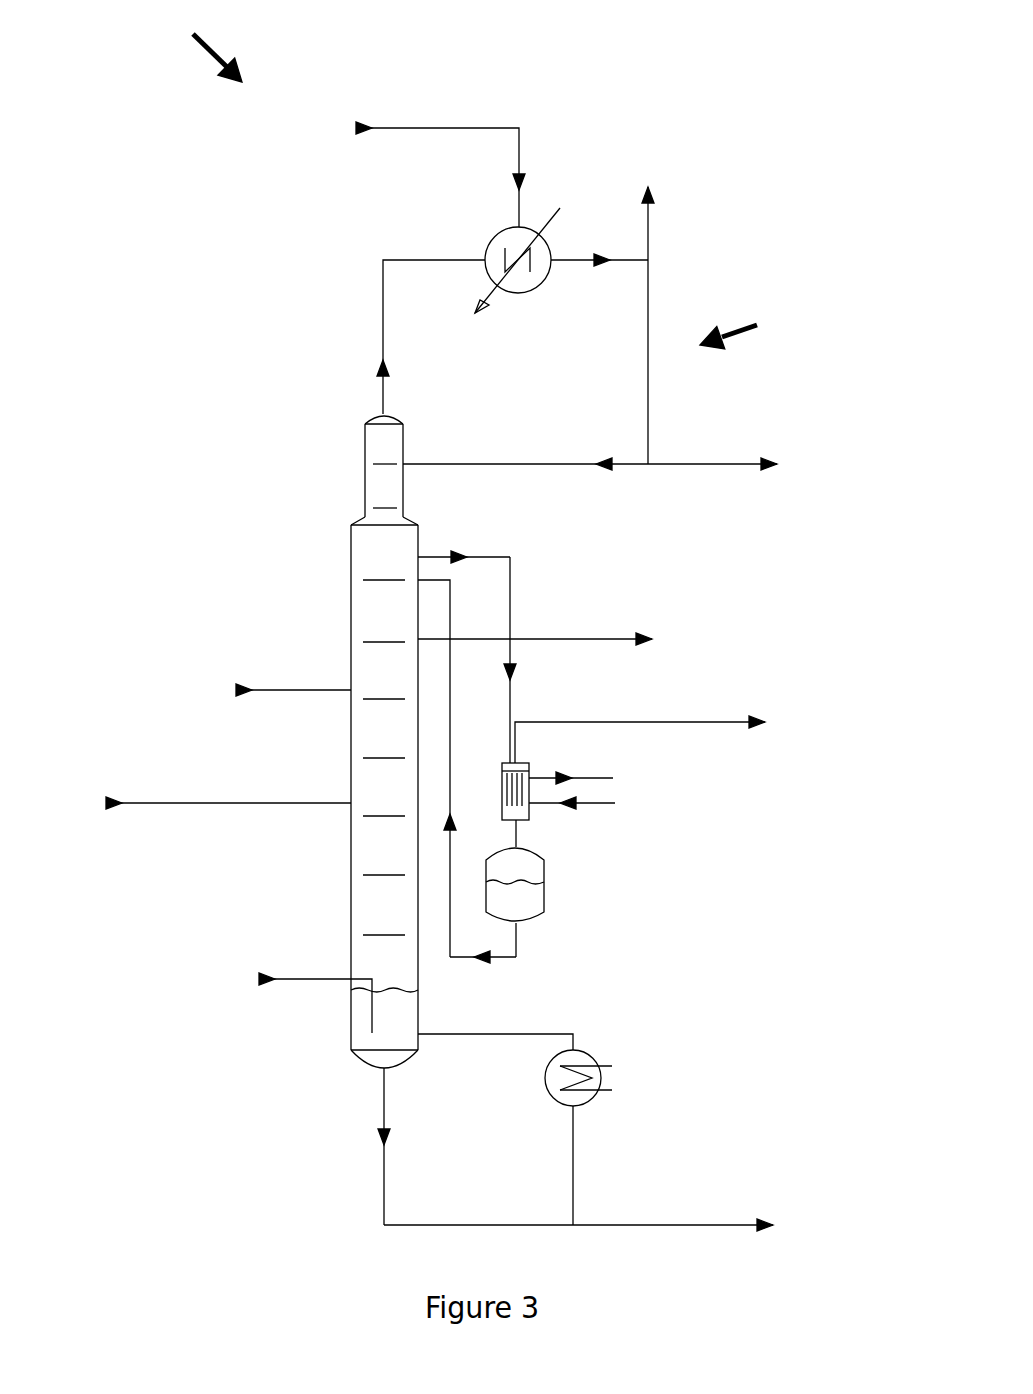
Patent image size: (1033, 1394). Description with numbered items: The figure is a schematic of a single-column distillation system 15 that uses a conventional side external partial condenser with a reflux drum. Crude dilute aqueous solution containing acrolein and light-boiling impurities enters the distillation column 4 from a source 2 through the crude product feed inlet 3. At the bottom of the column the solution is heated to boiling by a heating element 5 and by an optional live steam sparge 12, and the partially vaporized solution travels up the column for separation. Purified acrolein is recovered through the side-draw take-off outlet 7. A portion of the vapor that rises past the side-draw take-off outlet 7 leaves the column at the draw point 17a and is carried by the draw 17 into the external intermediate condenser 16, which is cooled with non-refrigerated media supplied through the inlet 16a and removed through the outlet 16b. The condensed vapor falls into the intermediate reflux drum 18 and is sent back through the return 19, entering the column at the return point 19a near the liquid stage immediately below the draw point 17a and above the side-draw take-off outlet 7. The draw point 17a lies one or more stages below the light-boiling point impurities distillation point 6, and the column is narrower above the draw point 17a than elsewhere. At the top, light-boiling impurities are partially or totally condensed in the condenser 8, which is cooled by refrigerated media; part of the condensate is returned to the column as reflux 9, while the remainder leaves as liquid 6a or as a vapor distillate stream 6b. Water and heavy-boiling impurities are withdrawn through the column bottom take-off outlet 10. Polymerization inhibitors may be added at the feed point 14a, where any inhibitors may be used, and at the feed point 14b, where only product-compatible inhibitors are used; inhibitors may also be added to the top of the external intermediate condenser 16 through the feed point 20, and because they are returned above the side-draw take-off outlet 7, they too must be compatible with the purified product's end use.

The single column distillation system 15 is at (197, 42).
The feed point 14b is at (366, 128).
The condenser 8 is at (490, 240).
The vapor distillate stream 6b is at (652, 187).
The light-boiling point impurities distillation point 6 is at (716, 362).
The reflux 9 is at (509, 464).
The liquid 6a is at (732, 464).
The draw point 17a is at (418, 557).
The draw 17 is at (510, 592).
The return point 19a is at (418, 580).
The side-draw take-off outlet 7 is at (652, 639).
The feed point 20 is at (642, 720).
The external intermediate condenser 16 is at (529, 820).
The inlet 16a is at (613, 778).
The outlet 16b is at (615, 803).
The intermediate reflux drum 18 is at (547, 918).
The return 19 is at (500, 958).
The distillation column 4 is at (351, 628).
The crude product feed inlet 3 is at (351, 803).
The feed point 14a is at (245, 690).
The source 2 is at (197, 805).
The live steam sparge 12 is at (262, 979).
The heating element 5 is at (598, 1062).
The column bottom take-off outlet 10 is at (660, 1225).